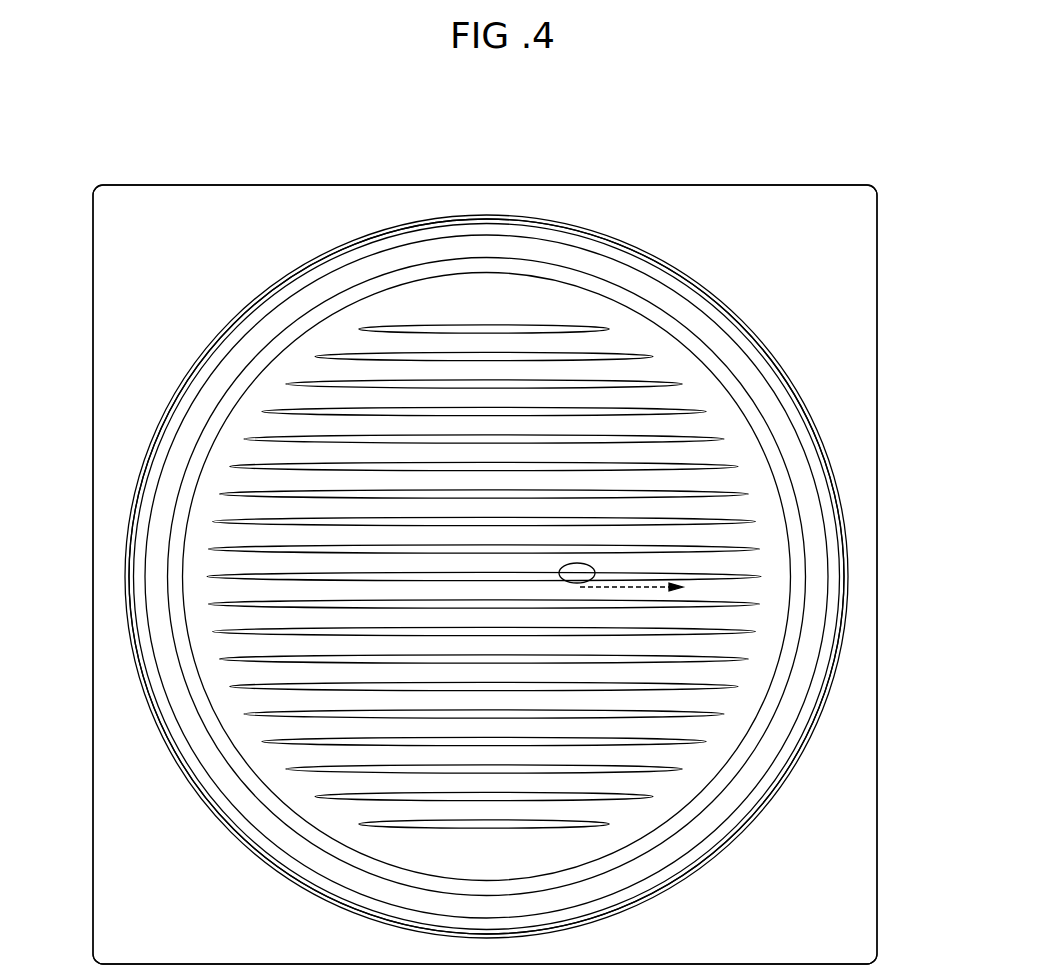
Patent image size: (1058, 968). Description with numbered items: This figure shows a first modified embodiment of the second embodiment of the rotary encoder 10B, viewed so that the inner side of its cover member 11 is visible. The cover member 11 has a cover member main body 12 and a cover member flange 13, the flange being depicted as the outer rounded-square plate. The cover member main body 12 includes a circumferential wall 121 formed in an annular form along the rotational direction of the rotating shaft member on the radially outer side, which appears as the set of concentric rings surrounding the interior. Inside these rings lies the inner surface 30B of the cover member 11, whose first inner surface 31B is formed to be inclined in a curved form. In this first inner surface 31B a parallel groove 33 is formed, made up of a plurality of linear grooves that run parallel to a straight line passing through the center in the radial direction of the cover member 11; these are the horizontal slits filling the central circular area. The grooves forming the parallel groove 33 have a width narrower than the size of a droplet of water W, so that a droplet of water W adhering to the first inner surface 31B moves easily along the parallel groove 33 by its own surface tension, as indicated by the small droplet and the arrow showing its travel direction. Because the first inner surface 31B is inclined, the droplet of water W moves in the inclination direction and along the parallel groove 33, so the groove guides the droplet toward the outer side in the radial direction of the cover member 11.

The rotary encoder 10B is at (800, 184).
The cover member 11 is at (531, 574).
The cover member main body 12 is at (832, 688).
The cover member flange 13 is at (852, 752).
The circumferential wall 121 is at (838, 483).
The inner surface 30B is at (487, 577).
The first inner surface 31B is at (478, 283).
The parallel groove 33 is at (212, 522).
The droplet of water W is at (594, 566).